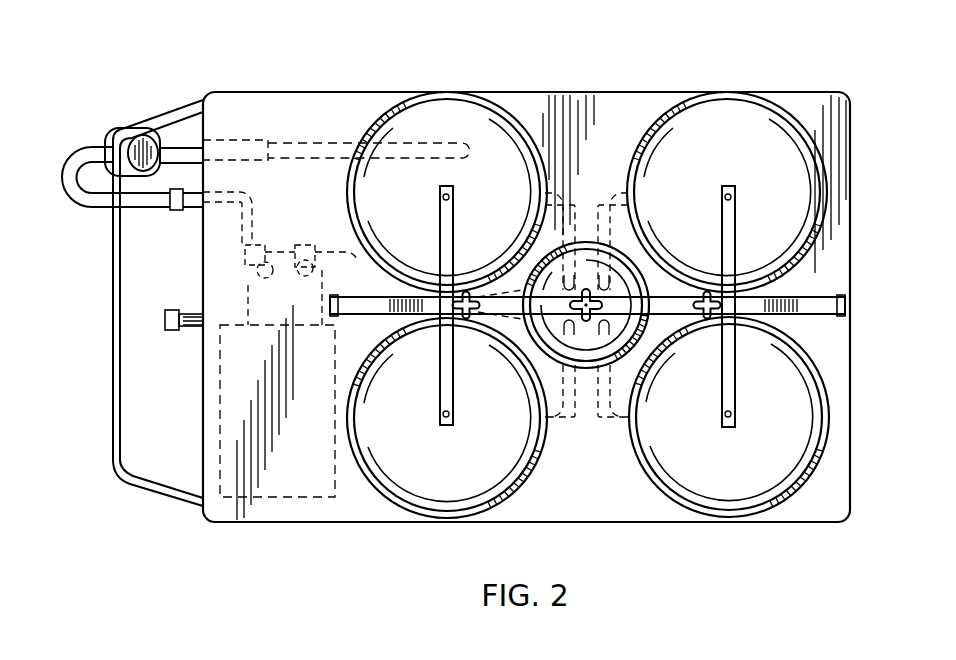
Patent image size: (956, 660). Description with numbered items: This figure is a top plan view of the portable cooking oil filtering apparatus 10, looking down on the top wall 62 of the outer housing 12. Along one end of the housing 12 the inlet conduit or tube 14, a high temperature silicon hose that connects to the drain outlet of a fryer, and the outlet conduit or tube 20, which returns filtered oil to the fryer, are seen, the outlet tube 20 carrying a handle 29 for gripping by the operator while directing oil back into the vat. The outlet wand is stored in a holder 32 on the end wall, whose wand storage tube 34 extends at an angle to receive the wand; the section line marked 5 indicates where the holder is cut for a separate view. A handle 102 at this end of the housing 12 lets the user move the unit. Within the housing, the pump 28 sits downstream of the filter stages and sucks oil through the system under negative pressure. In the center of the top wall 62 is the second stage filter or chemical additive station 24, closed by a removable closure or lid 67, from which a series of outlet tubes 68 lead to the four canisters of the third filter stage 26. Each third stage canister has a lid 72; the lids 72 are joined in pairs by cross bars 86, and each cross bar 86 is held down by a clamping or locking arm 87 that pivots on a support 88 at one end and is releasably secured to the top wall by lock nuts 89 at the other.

The section line 5- 5 is at (75, 158).
The portable cooking oil filtering apparatus 10 is at (647, 81).
The outer housing 12 is at (851, 143).
The inlet conduit or tube 14 is at (188, 323).
The outlet conduit or tube 20 is at (136, 205).
The second stage filter or chemical additive station 24 is at (641, 251).
The third filter stage 26 is at (389, 104).
The pump 28 is at (222, 382).
The handle 29 is at (143, 140).
The holder 32 is at (224, 139).
The wand storage tube 34 is at (331, 140).
The top wall 62 is at (606, 100).
The removable closure or lid 67 is at (548, 318).
The outlet tubes 68 is at (610, 193).
The lid 72 is at (421, 115).
The cross bar 86 is at (735, 233).
The clamping or locking arm 87 is at (417, 315).
The support 88 is at (842, 298).
The lock nuts 89 is at (466, 296).
The handle 102 is at (112, 268).